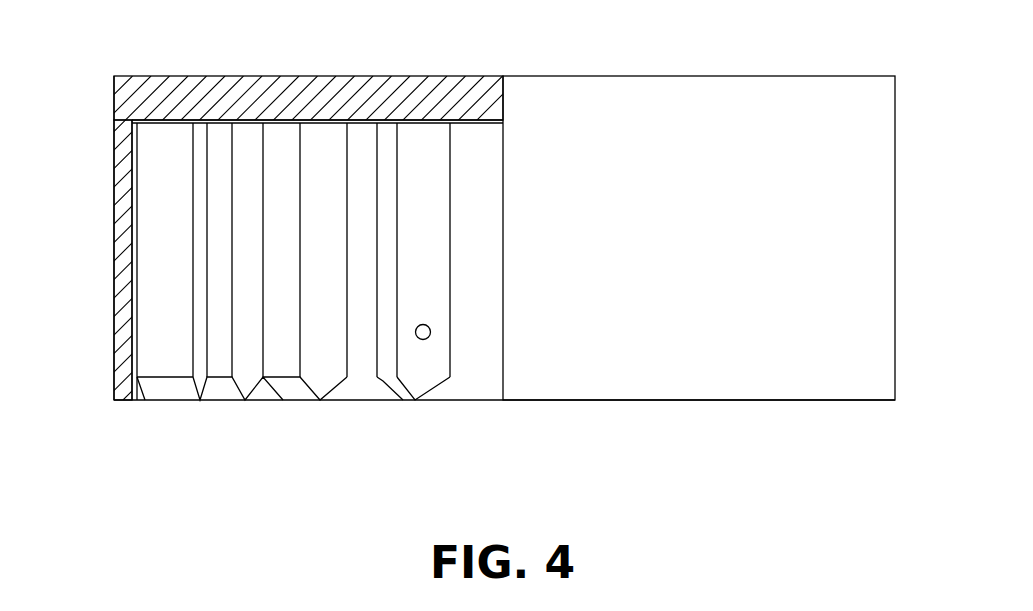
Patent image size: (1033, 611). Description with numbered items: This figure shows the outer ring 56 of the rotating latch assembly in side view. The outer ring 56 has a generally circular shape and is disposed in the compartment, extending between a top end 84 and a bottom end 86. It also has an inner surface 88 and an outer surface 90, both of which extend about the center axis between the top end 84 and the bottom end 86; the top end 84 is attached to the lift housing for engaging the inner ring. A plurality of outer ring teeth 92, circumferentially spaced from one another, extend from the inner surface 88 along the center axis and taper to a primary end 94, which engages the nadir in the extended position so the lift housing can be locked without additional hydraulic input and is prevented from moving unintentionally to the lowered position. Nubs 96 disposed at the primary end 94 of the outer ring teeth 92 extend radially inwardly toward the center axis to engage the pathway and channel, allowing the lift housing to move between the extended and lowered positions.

The outer ring 56 is at (112, 92).
The top end 84 is at (806, 76).
The bottom end 86 is at (758, 400).
The inner surface 88 is at (131, 343).
The outer surface 90 is at (113, 242).
The outer ring teeth 92 is at (165, 358).
The primary end 94 is at (321, 397).
The nubs 96 is at (421, 340).